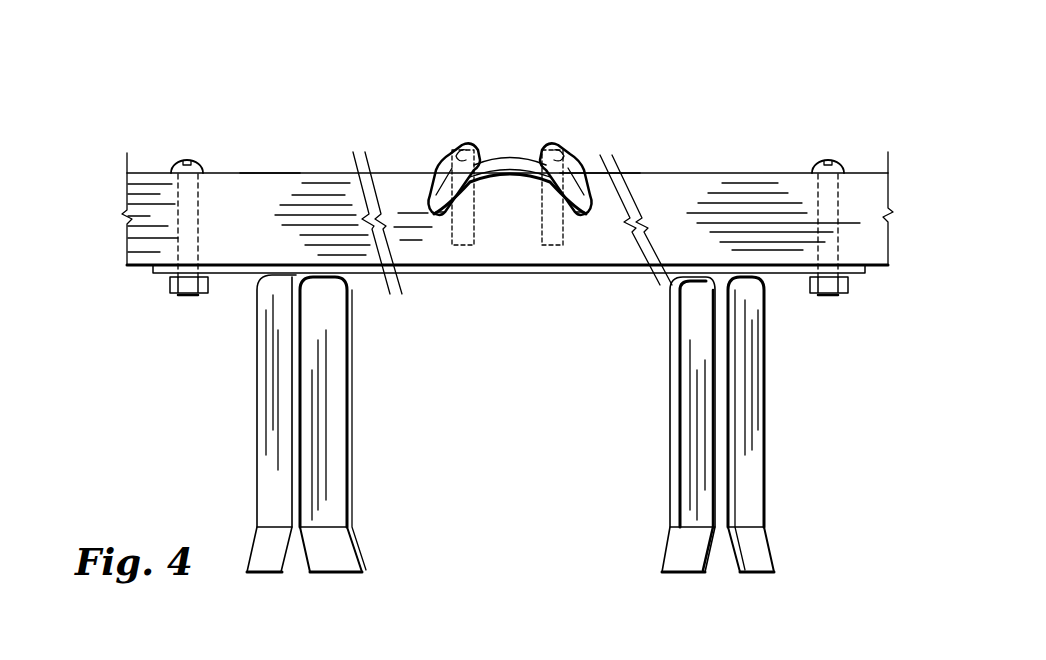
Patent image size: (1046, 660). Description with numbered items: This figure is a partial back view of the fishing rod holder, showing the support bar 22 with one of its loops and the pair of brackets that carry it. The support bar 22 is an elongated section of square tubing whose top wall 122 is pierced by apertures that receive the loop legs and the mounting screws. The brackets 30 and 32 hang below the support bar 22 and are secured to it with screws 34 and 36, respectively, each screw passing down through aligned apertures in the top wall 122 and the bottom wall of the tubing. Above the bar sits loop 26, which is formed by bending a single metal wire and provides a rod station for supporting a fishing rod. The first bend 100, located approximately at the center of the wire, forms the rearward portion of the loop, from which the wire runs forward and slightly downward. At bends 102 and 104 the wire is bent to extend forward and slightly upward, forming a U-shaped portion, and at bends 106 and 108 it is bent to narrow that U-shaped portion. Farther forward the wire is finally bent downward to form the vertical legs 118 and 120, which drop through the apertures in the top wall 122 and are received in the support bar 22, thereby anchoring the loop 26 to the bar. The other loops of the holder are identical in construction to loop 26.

The support bar 22 is at (226, 177).
The loop 26 is at (582, 181).
The bracket 30 is at (753, 473).
The bracket 32 is at (272, 430).
The screw 34 is at (830, 162).
The screw 36 is at (176, 163).
The first bend 100 is at (528, 212).
The bend 102 is at (579, 212).
The bend 104 is at (436, 214).
The bend 106 is at (585, 160).
The bend 108 is at (427, 162).
The vertical leg 118 is at (547, 247).
The vertical leg 120 is at (461, 247).
The top wall 122 is at (269, 172).